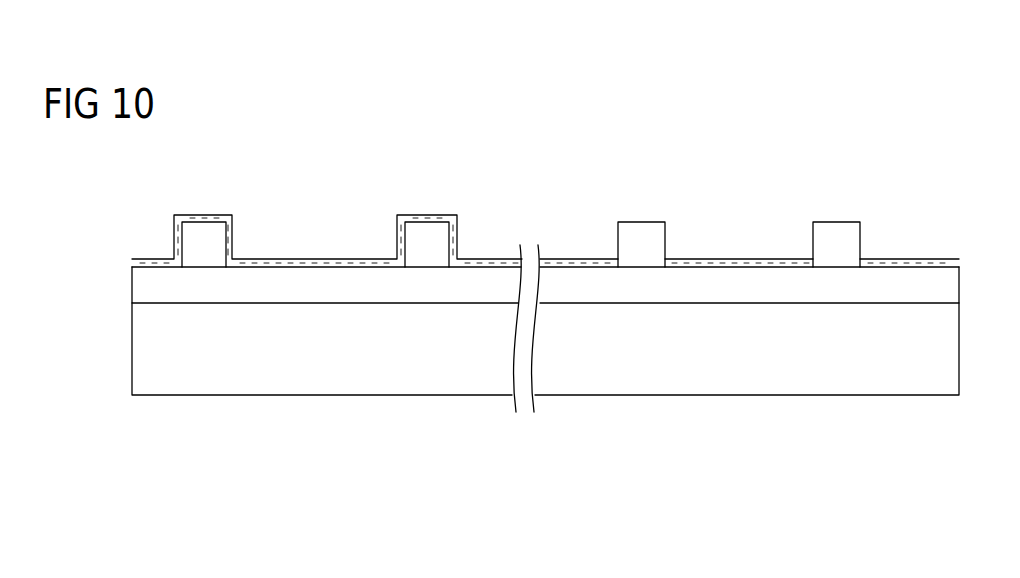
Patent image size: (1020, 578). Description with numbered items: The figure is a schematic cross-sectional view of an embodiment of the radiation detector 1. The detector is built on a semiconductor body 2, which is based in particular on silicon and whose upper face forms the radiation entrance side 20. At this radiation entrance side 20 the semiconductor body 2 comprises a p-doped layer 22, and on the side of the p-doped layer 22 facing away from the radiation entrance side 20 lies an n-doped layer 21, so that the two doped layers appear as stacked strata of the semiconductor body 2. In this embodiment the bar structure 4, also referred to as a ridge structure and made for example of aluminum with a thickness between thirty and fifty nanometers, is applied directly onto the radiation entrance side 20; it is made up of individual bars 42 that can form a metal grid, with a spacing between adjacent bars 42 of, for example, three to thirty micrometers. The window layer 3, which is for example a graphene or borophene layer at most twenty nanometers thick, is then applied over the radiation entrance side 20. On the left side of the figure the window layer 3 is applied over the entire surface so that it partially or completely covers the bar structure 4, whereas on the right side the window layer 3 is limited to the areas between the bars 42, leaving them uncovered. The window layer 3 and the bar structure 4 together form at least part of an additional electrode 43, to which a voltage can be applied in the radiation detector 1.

The radiation detector 1 is at (833, 180).
The semiconductor body 2 is at (71, 267).
The window layer 3 is at (258, 258).
The bar structure 4 is at (208, 233).
The radiation entrance side 20 is at (592, 263).
The n-doped layer 21 is at (140, 348).
The p-doped layer 22 is at (140, 285).
The bars 42 is at (642, 232).
The additional electrode 43 is at (208, 171).